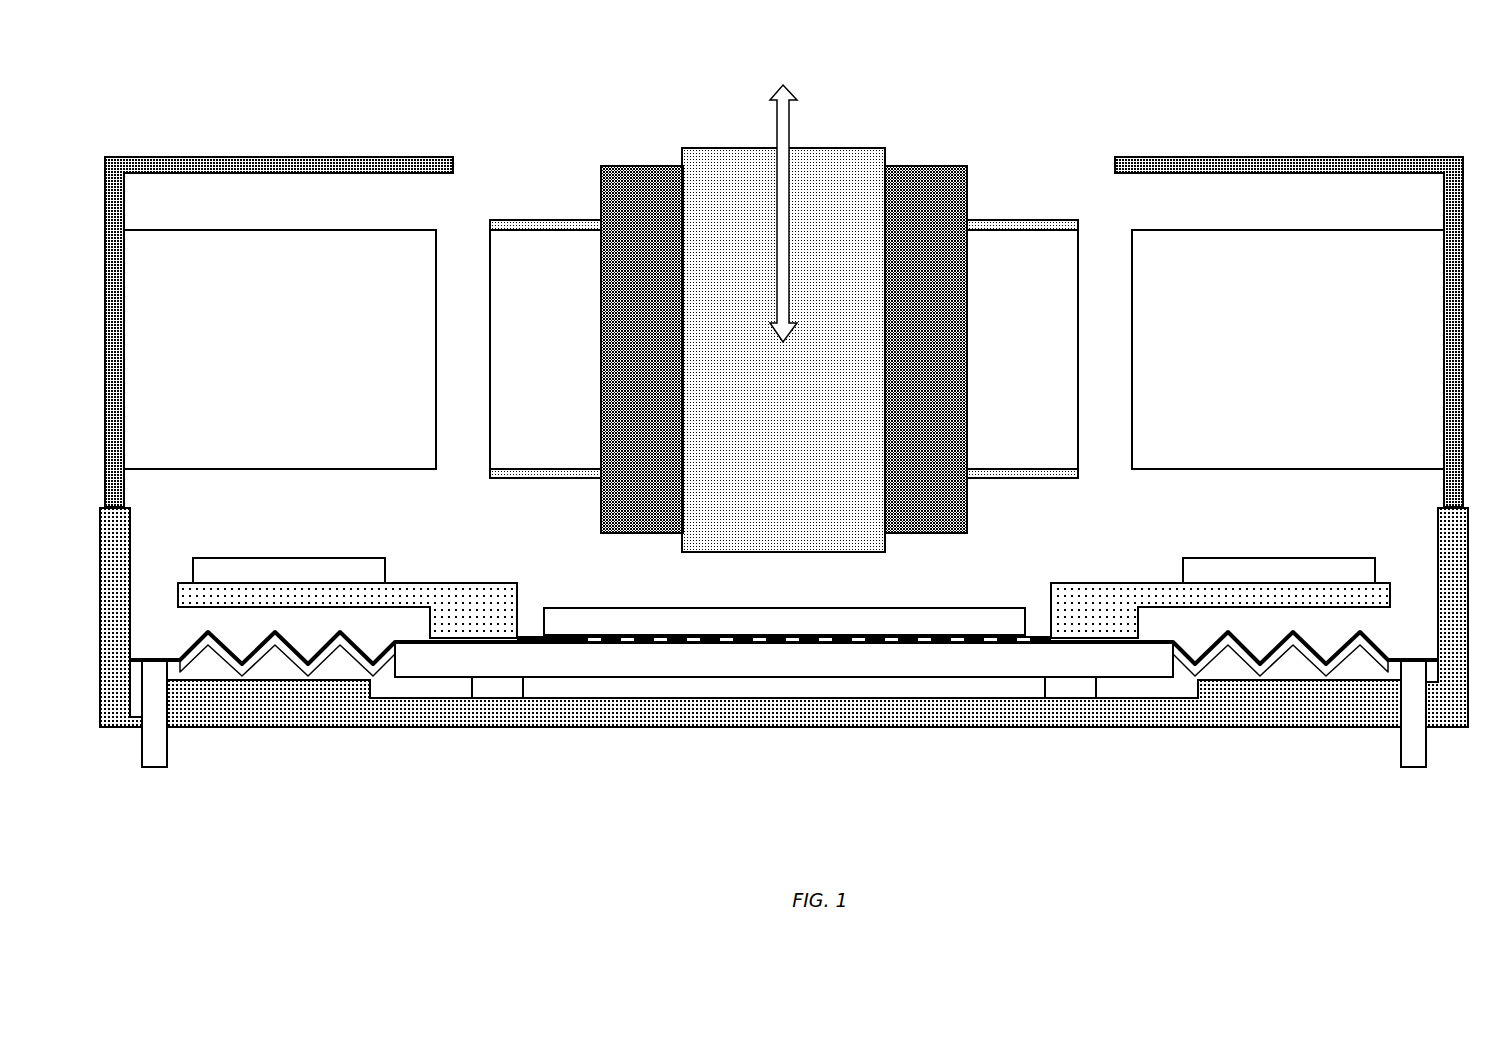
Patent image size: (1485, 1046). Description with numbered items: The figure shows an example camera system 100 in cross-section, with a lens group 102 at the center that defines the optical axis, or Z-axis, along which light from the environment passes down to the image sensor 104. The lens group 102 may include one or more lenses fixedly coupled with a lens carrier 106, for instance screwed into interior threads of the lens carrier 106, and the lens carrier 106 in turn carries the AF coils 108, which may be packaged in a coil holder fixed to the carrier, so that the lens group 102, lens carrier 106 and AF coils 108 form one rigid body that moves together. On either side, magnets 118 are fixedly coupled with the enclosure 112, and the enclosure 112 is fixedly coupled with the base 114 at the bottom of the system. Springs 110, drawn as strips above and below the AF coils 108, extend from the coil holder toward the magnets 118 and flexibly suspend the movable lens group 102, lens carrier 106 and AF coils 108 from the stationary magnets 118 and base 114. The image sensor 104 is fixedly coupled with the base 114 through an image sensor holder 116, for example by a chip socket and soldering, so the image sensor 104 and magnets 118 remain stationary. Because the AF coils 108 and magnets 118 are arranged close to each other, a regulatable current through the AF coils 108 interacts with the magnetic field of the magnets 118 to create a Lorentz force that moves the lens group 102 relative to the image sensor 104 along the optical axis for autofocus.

The camera system 100 is at (1100, 78).
The lens group 102 is at (783, 306).
The image sensor 104 is at (782, 620).
The lens carrier 106 is at (784, 349).
The AF coil 108 is at (784, 349).
The spring 110 is at (1019, 510).
The enclosure 112 is at (270, 156).
The base 114 is at (563, 706).
The image sensor holder 116 is at (442, 657).
The magnet 118 is at (784, 349).